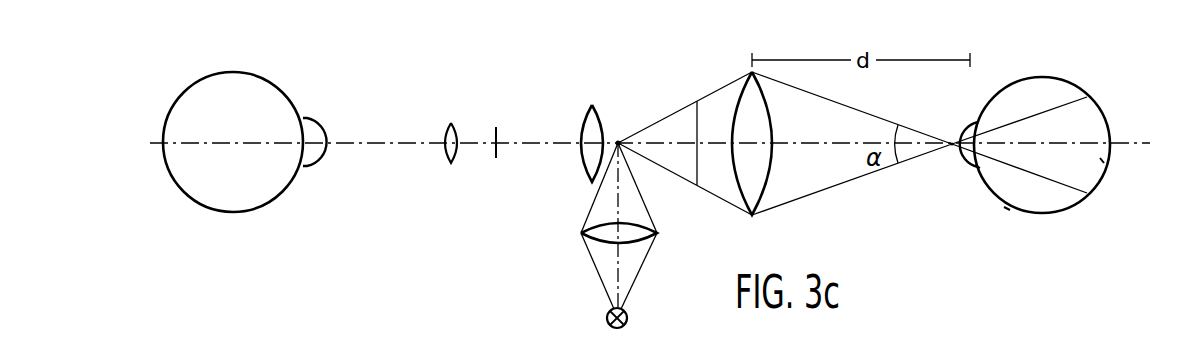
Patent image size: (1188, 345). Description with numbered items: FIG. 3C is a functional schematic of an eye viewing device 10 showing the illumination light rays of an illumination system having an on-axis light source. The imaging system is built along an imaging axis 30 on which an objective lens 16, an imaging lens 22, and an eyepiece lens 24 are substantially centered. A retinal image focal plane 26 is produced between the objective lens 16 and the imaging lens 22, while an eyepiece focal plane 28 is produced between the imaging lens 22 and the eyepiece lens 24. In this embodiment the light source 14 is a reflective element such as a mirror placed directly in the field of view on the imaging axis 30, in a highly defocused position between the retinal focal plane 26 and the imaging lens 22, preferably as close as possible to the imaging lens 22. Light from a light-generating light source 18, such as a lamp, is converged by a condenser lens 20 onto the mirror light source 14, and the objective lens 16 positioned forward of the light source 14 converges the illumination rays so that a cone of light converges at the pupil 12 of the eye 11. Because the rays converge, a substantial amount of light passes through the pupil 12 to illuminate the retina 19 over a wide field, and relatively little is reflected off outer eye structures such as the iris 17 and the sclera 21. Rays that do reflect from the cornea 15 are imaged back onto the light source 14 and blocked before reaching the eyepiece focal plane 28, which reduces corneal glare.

The eye viewing device 10 is at (478, 203).
The eye 11 is at (1074, 66).
The pupil 12 is at (975, 130).
The light source 14 is at (618, 140).
The cornea 15 is at (972, 125).
The objective lens 16 is at (763, 185).
The iris 17 is at (974, 168).
The light-generating light source 18 is at (628, 313).
The retina 19 is at (1103, 161).
The condenser lens 20 is at (606, 243).
The sclera 21 is at (1008, 209).
The imaging lens 22 is at (581, 130).
The eyepiece lens 24 is at (449, 128).
The retinal image focal plane 26 is at (696, 121).
The eyepiece focal plane 28 is at (494, 128).
The imaging axis 30 is at (412, 142).